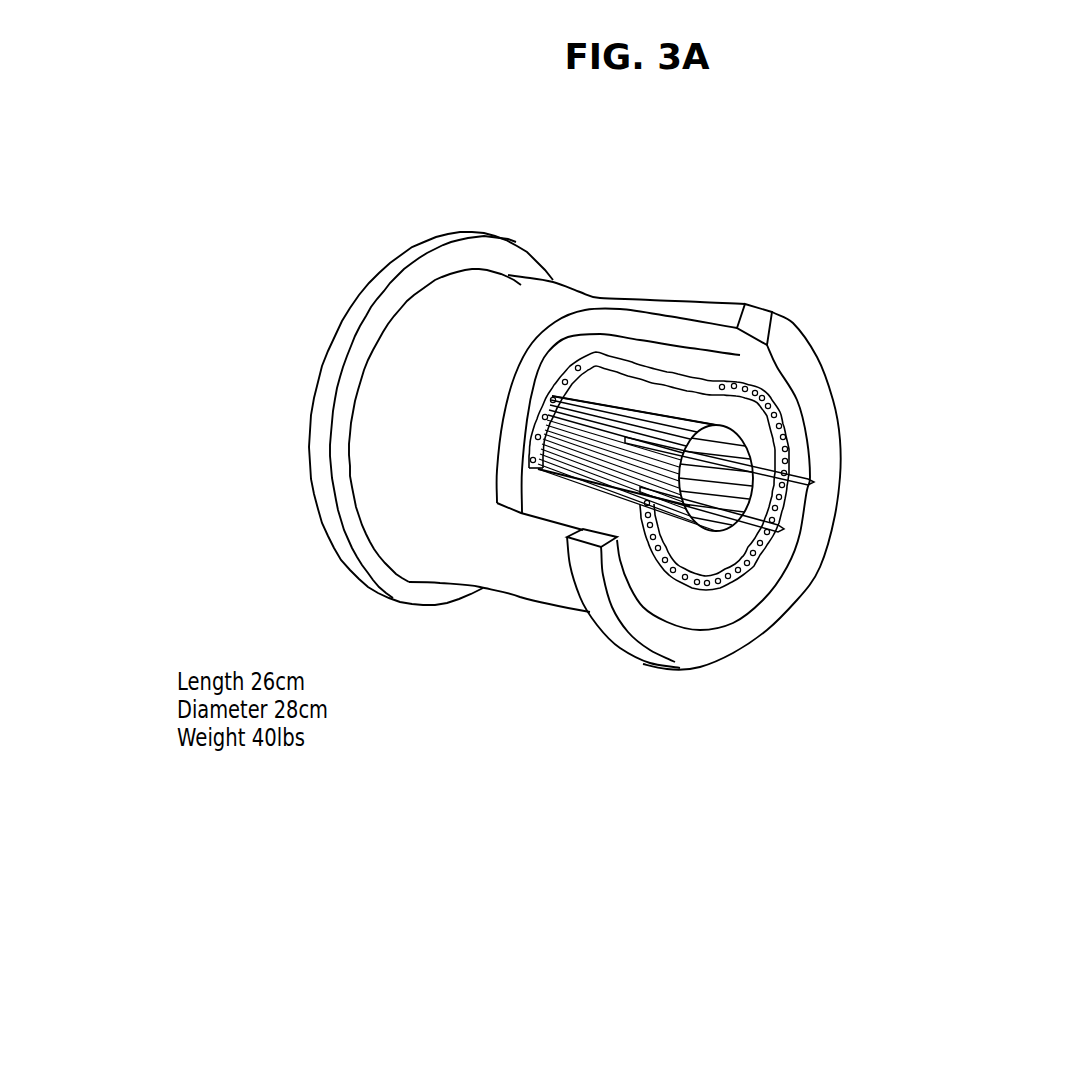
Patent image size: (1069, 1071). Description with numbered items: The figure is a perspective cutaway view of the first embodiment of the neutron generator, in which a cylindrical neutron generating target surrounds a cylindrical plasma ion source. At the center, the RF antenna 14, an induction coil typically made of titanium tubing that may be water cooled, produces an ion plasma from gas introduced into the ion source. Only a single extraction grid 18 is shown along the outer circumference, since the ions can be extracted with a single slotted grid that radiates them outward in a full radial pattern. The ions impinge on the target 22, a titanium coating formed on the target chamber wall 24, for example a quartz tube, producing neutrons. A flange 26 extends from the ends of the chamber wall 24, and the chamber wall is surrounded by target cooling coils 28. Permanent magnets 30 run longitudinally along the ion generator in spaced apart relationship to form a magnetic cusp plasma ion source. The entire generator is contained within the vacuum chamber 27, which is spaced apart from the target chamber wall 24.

The RF antenna 14 is at (782, 535).
The extraction grid 18 is at (816, 488).
The target 22 is at (723, 554).
The target chamber wall 24 is at (522, 490).
The flange 26 is at (510, 247).
The vacuum chamber 27 is at (377, 411).
The target cooling coils 28 is at (763, 395).
The permanent magnets 30 is at (661, 572).